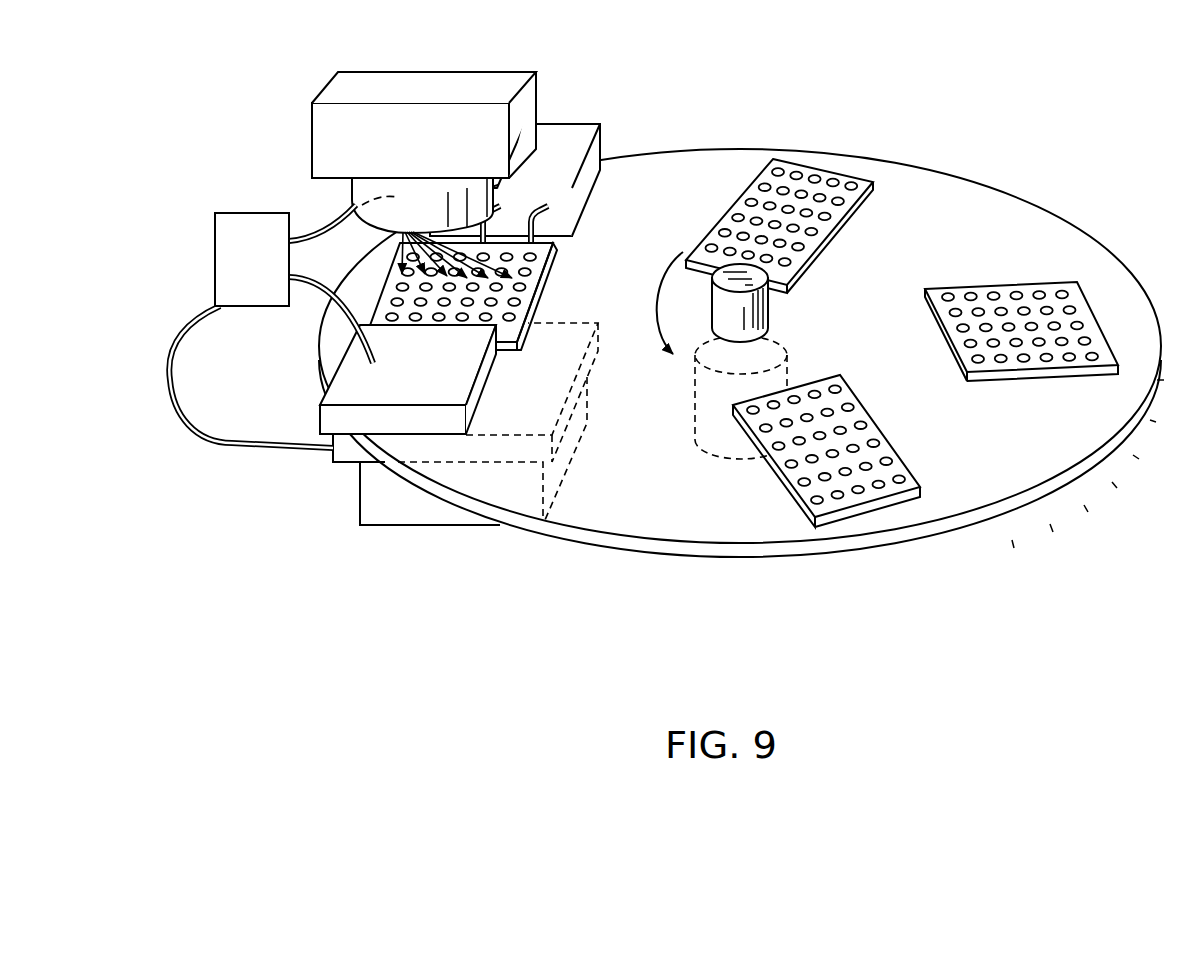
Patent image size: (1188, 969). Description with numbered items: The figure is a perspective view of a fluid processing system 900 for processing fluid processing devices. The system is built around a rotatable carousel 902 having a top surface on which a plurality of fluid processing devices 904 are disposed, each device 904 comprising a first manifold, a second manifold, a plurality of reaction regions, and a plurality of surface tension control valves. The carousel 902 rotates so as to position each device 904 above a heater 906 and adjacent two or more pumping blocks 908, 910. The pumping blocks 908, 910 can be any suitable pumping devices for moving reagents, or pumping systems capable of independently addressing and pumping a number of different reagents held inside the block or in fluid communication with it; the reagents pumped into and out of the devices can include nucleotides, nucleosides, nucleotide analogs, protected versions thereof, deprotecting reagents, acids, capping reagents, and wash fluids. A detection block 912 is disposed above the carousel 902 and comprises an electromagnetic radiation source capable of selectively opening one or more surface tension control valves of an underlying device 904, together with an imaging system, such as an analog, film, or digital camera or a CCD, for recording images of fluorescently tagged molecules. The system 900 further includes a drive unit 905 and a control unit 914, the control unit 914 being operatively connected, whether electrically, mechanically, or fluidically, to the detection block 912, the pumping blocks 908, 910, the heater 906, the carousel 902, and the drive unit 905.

The fluid processing system 900 is at (662, 353).
The rotatable carousel 902 is at (708, 353).
The fluid processing device 904 is at (813, 164).
The drive unit 905 is at (693, 406).
The heater 906 is at (326, 454).
The pumping block 908 is at (326, 418).
The pumping block 910 is at (566, 130).
The detection block 912 is at (327, 142).
The control unit 914 is at (226, 251).